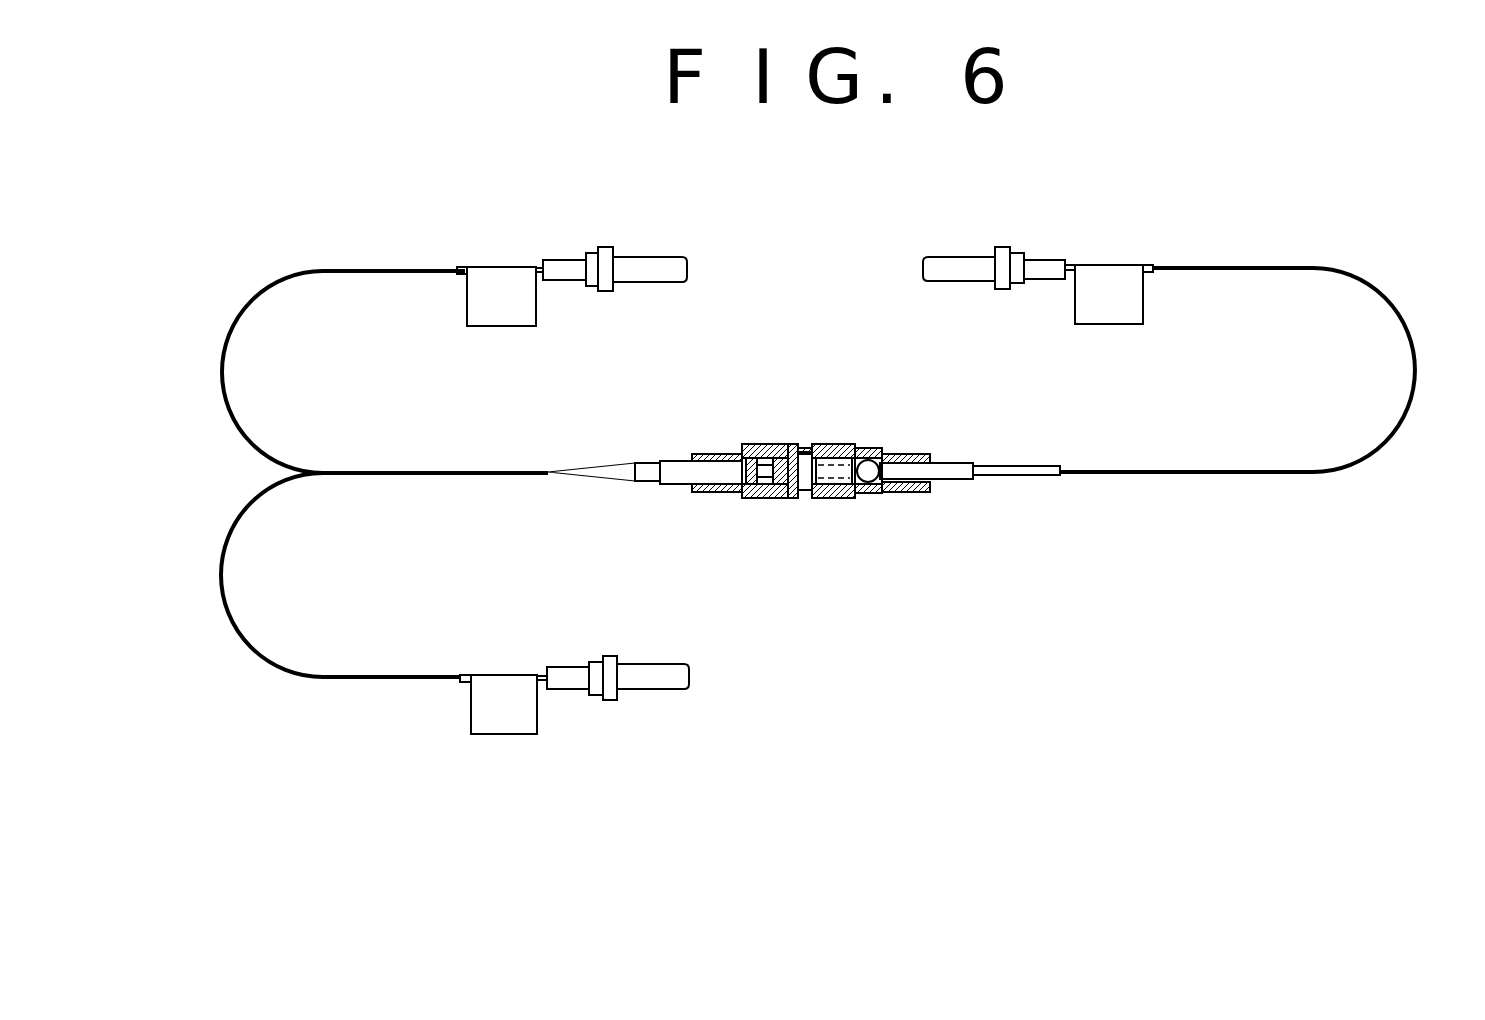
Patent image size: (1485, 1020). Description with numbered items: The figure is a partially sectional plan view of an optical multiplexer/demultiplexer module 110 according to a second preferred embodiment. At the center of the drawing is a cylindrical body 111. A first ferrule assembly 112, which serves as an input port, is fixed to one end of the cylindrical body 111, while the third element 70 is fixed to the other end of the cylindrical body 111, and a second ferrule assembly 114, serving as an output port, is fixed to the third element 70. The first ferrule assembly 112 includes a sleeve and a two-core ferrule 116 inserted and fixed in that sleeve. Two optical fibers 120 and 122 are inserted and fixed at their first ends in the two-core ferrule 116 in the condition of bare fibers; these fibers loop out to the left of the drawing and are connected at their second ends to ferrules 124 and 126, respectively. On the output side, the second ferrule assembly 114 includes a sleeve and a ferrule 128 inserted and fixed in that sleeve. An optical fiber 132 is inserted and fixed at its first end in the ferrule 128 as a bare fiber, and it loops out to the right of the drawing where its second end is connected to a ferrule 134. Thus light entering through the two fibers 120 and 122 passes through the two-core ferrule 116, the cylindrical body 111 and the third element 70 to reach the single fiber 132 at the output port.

The third element 70 is at (867, 451).
The optical multiplexer/demultiplexer module 110 is at (845, 423).
The cylindrical body 111 is at (832, 440).
The first ferrule assembly 112 is at (683, 454).
The second ferrule assembly 114 is at (915, 452).
The two-core ferrule 116 is at (675, 478).
The optical fiber 120 is at (308, 681).
The optical fiber 122 is at (385, 268).
The ferrule 124 is at (642, 692).
The ferrule 126 is at (642, 259).
The ferrule 128 is at (945, 476).
The optical fiber 132 is at (1160, 475).
The ferrule 134 is at (952, 259).